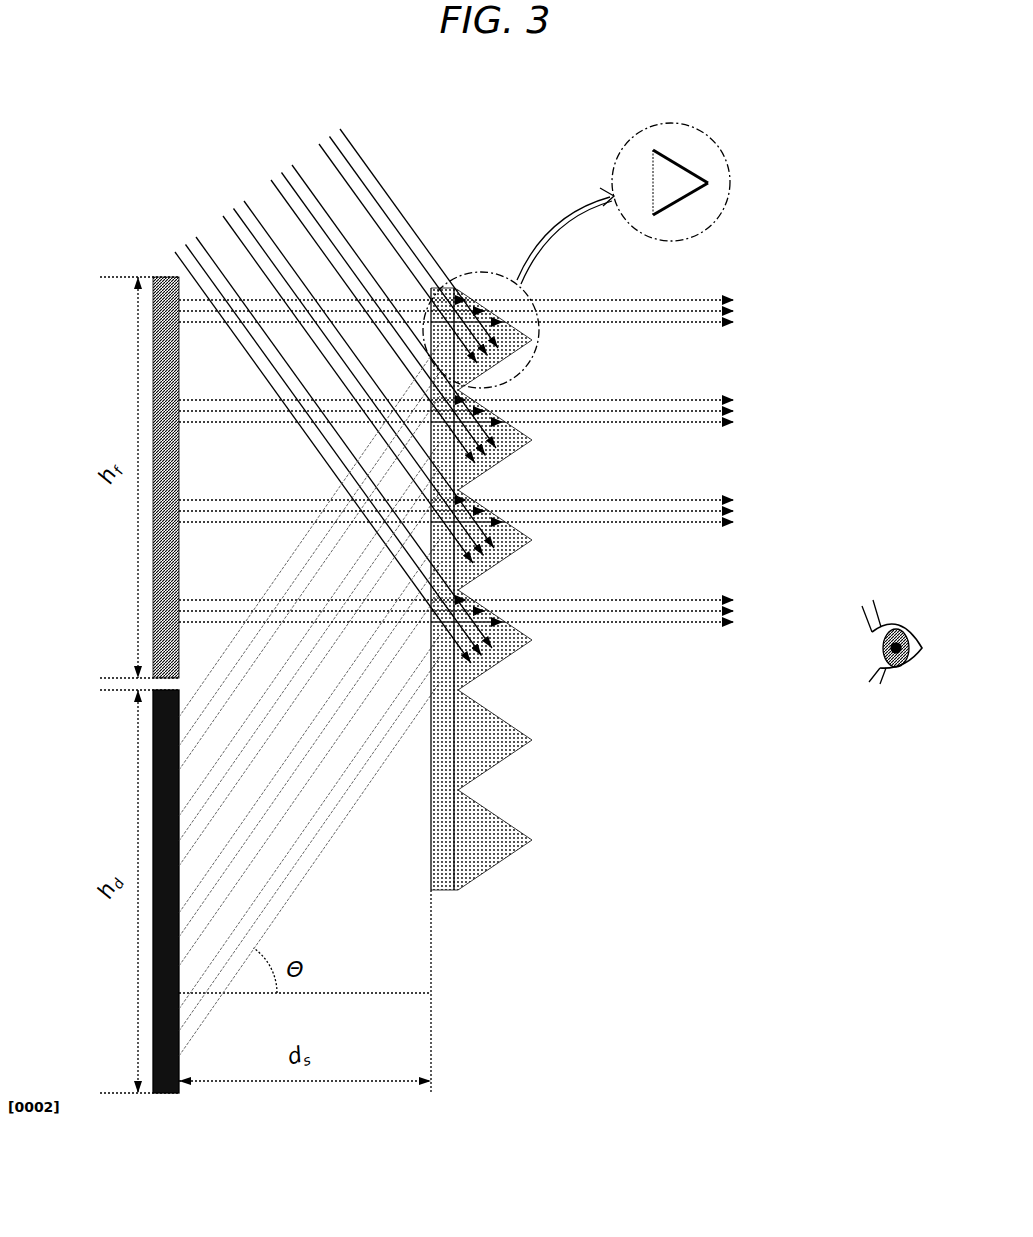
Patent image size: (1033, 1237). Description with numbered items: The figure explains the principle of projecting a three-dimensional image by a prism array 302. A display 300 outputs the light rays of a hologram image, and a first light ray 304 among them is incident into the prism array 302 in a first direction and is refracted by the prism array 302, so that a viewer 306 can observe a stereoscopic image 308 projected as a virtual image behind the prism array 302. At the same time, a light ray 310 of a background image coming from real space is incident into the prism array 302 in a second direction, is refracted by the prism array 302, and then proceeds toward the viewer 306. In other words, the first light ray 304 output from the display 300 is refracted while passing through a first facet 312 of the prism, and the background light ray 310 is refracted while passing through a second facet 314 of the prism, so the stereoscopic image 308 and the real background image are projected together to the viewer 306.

The display 300 is at (157, 763).
The prism array 302 is at (498, 863).
The first light ray 304 is at (328, 862).
The viewer 306 is at (900, 680).
The stereoscopic image 308 is at (158, 380).
The light ray of a background image 310 is at (375, 185).
The first facet 312 is at (672, 168).
The second facet 314 is at (683, 203).